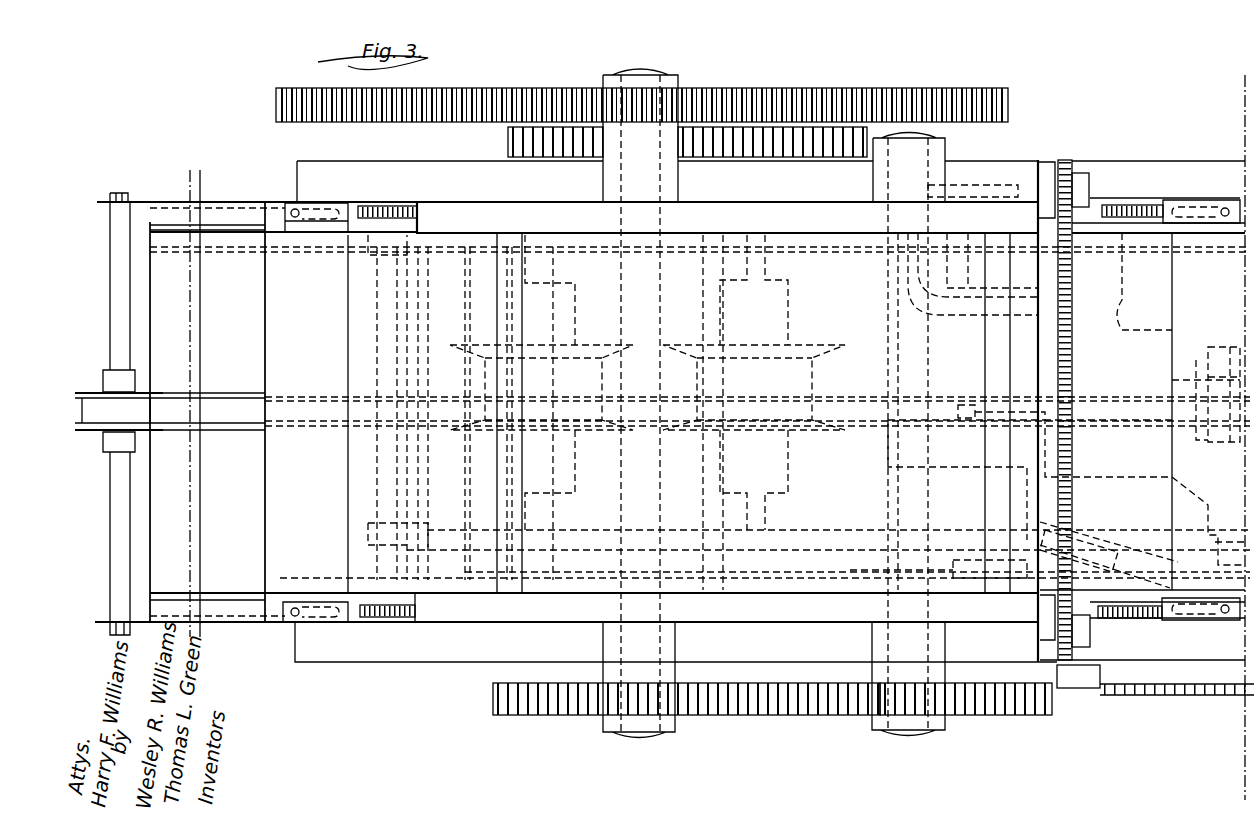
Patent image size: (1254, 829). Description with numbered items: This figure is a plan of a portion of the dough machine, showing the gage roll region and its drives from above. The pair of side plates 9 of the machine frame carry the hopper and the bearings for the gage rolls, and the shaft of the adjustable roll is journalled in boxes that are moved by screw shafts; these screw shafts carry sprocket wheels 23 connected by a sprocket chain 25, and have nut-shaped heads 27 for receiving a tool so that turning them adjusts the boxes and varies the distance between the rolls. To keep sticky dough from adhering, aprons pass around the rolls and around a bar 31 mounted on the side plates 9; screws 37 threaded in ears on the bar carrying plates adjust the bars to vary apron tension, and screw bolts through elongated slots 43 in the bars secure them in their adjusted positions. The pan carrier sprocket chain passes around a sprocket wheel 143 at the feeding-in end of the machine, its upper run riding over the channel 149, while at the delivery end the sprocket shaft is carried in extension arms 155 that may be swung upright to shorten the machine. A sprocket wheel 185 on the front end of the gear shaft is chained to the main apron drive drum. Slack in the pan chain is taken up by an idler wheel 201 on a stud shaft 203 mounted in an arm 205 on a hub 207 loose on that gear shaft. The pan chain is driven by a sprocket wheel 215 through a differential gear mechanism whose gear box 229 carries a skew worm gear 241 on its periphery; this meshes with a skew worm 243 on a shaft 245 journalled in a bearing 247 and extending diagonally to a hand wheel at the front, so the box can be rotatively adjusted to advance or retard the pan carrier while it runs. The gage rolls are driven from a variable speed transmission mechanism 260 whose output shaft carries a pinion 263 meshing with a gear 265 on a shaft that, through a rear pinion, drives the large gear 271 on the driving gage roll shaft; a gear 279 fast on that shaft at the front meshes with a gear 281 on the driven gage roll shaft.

The side plates 9 is at (398, 182).
The sprocket wheels 23 is at (1072, 165).
The sprocket chain 25 is at (1065, 272).
The nut-shaped heads 27 is at (1090, 180).
The bar 31 is at (278, 527).
The screws 37 is at (1130, 204).
The elongated slots 43 is at (312, 212).
The sprocket wheel 143 is at (93, 430).
The channel 149 is at (233, 428).
The extension arms 155 is at (147, 201).
The sprocket wheel 185 is at (1075, 693).
The idler wheel 201 is at (1200, 420).
The stud shaft 203 is at (1222, 363).
The arm 205 is at (1231, 312).
The hub 207 is at (1122, 302).
The sprocket wheel 215 is at (962, 402).
The box 229 is at (1030, 480).
The skew worm gear 241 is at (955, 575).
The skew worm 243 is at (1093, 523).
The shaft 245 is at (1230, 542).
The bearing 247 is at (1123, 543).
The variable speed transmission mechanism 260 is at (644, 437).
The pinion 263 is at (520, 140).
The gear 265 is at (790, 148).
The large gear 271 is at (790, 100).
The gear 279 is at (535, 716).
The gear 281 is at (862, 711).